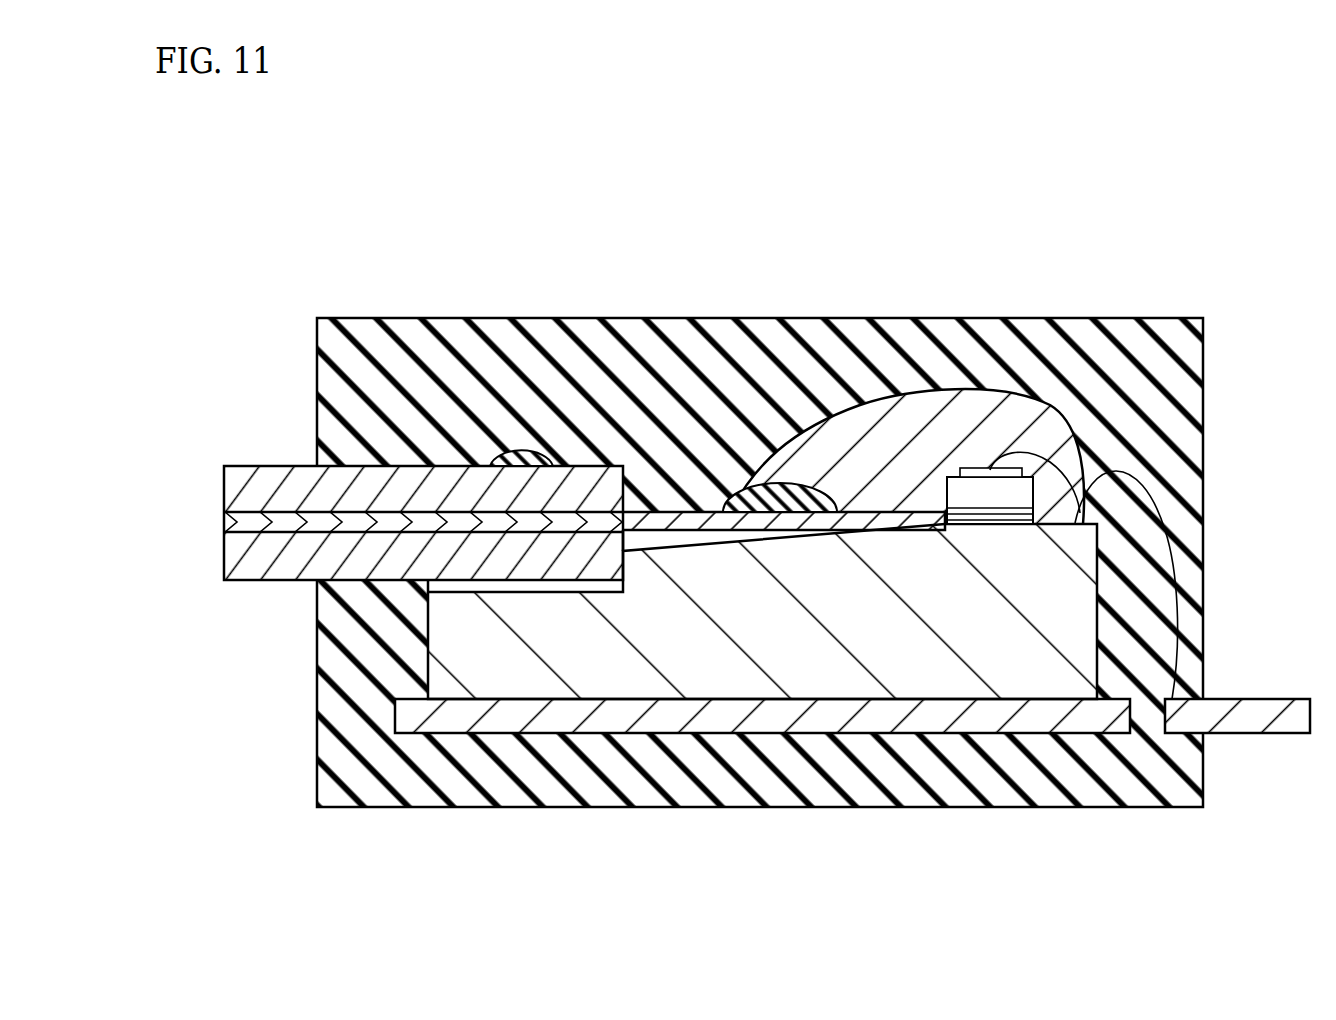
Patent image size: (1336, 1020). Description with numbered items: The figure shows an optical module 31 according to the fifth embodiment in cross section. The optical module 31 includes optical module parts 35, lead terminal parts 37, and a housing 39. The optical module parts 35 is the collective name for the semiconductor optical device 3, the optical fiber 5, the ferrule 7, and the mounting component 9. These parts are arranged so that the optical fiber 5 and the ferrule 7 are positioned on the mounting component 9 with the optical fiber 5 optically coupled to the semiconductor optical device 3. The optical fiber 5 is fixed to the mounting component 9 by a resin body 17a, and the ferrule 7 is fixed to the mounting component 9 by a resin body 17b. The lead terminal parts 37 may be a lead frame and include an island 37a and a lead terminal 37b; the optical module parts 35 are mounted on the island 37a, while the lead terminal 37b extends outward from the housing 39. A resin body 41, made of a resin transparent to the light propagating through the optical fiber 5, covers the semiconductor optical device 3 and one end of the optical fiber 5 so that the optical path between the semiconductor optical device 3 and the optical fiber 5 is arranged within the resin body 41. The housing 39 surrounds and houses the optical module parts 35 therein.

The optical module 31 is at (1100, 178).
The optical module parts 35 is at (863, 173).
The housing 39 is at (878, 810).
The semiconductor optical device 3 is at (957, 490).
The optical fiber 5 is at (428, 522).
The ferrule 7 is at (400, 470).
The mounting component 9 is at (703, 578).
The resin body 17a is at (785, 490).
The resin body 17b is at (553, 450).
The resin body 41 is at (953, 390).
The lead terminal parts 37 is at (852, 804).
The island 37a is at (673, 715).
The lead terminal 37b is at (1237, 723).